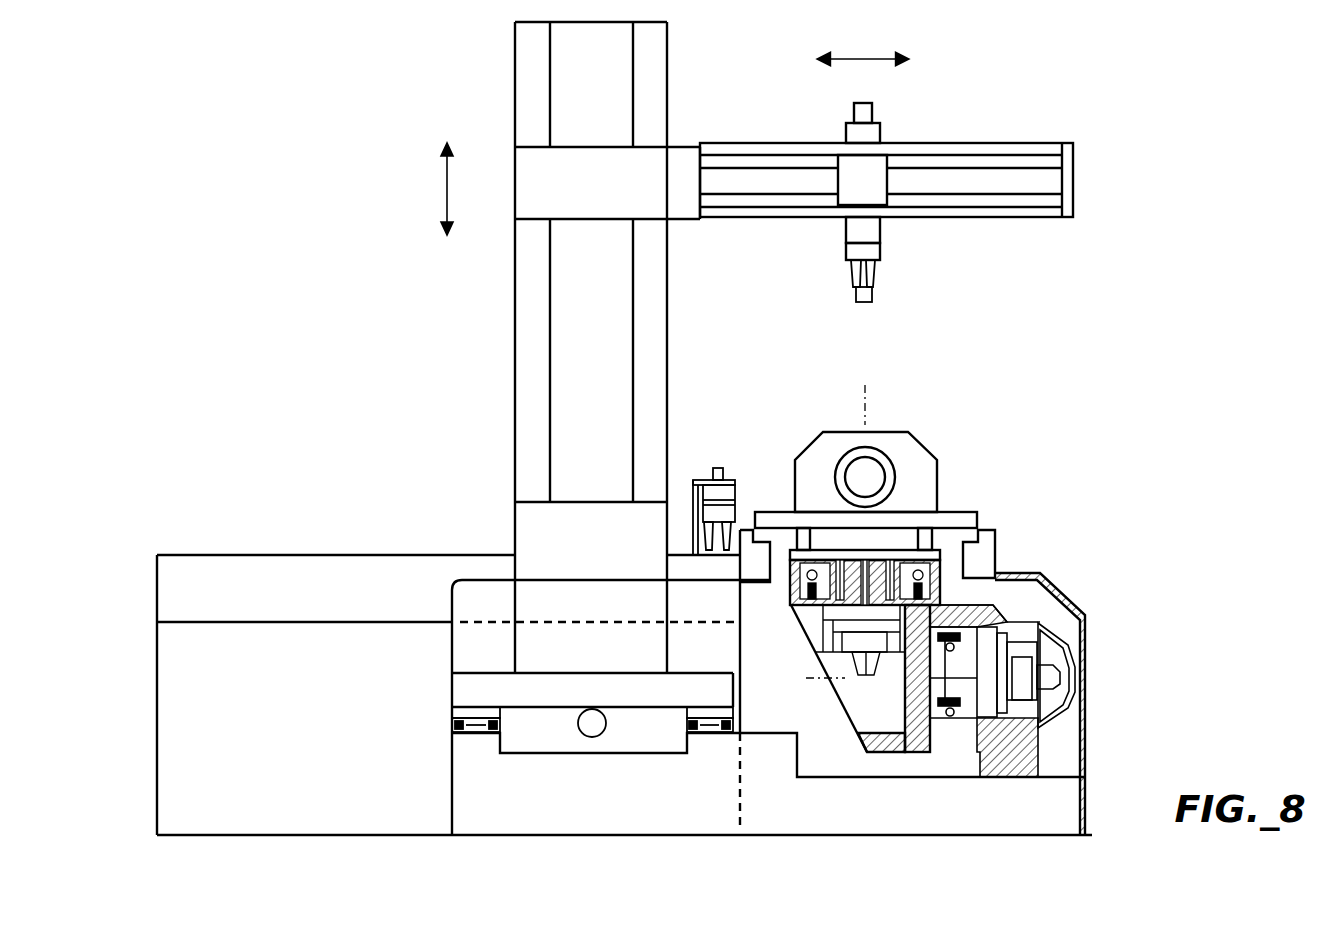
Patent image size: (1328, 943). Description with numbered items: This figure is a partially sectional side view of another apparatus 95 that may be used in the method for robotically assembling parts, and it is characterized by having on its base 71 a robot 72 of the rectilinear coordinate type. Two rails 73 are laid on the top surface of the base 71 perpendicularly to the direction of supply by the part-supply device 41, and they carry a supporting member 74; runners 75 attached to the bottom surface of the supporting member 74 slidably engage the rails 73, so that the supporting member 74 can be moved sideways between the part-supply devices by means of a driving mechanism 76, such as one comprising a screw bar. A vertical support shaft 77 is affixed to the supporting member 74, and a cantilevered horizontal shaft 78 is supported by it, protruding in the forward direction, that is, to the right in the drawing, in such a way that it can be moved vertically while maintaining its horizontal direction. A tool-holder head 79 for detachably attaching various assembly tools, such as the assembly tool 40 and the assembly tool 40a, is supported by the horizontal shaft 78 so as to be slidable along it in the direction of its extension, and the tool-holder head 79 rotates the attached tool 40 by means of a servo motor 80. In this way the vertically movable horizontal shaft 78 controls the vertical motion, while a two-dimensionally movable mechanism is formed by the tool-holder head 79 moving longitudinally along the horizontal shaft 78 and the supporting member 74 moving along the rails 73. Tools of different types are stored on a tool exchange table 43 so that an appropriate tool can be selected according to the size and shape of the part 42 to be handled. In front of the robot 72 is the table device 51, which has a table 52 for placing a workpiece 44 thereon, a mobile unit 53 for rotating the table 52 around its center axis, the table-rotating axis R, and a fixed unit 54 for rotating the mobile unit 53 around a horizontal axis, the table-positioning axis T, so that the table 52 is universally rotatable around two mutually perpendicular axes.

The assembly tool 40 is at (873, 250).
The assembly tool 40a is at (735, 495).
The part-supply device 41 is at (318, 555).
The part 42 is at (870, 296).
The tool exchange table 43 is at (697, 478).
The workpiece 44 is at (937, 477).
The table device 51 is at (952, 597).
The table 52 is at (978, 520).
The mobile unit 53 is at (870, 723).
The fixed unit 54 is at (1043, 727).
The base 71 is at (460, 793).
The robot 72 is at (677, 108).
The rails 73 is at (455, 725).
The supporting member 74 is at (473, 683).
The runners 75 is at (452, 715).
The driving mechanism 76 is at (583, 731).
The vertical support shaft 77 is at (573, 313).
The horizontal shaft 78 is at (992, 170).
The tool-holder head 79 is at (845, 178).
The servo motor 80 is at (872, 116).
The apparatus 95 is at (386, 188).
The table-rotating axis R is at (864, 391).
The table-positioning axis T is at (815, 678).